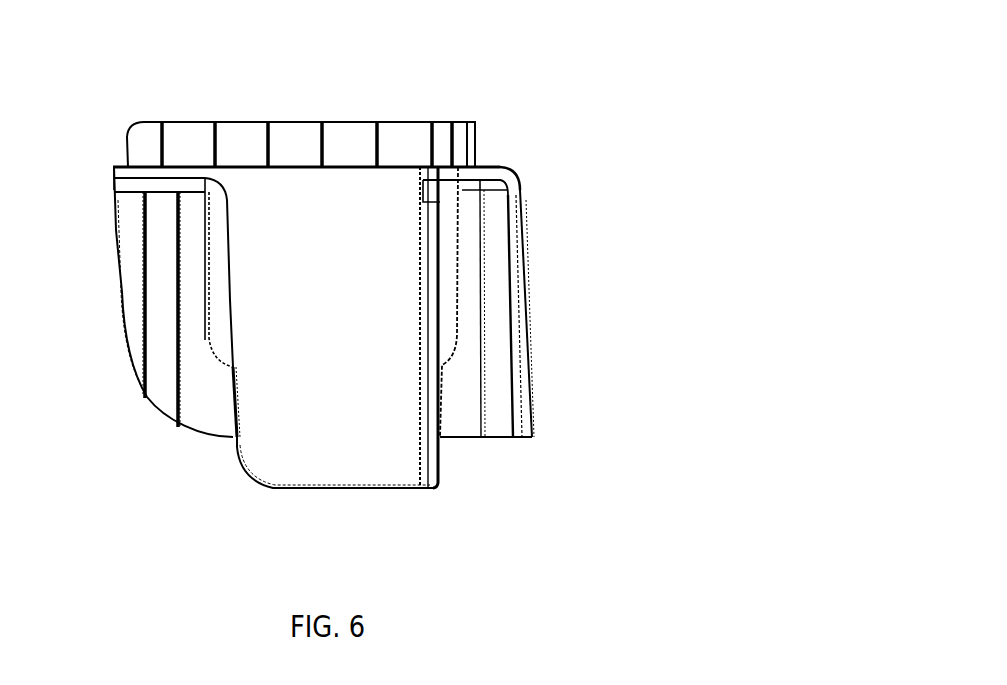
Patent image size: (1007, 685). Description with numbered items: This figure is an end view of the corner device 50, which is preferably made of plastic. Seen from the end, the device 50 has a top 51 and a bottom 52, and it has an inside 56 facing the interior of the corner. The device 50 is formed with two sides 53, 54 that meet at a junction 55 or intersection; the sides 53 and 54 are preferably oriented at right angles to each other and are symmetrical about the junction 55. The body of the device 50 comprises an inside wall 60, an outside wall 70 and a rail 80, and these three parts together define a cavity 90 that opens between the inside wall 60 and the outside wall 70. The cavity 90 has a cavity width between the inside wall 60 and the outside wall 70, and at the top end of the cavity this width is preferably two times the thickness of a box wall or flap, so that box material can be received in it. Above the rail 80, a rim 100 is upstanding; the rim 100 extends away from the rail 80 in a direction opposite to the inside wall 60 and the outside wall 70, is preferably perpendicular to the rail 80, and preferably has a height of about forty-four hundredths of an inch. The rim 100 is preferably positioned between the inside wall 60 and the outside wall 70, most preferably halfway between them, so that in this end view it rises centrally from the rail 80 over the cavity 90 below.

The corner device 50 is at (597, 200).
The top 51 is at (400, 122).
The bottom 52 is at (412, 488).
The side 53 is at (523, 374).
The side 54 is at (122, 291).
The junction 55 is at (477, 138).
The inside 56 is at (330, 197).
The inside wall 60 is at (282, 488).
The outside wall 70 is at (523, 293).
The rail 80 is at (487, 163).
The cavity 90 is at (463, 367).
The rim 100 is at (233, 122).